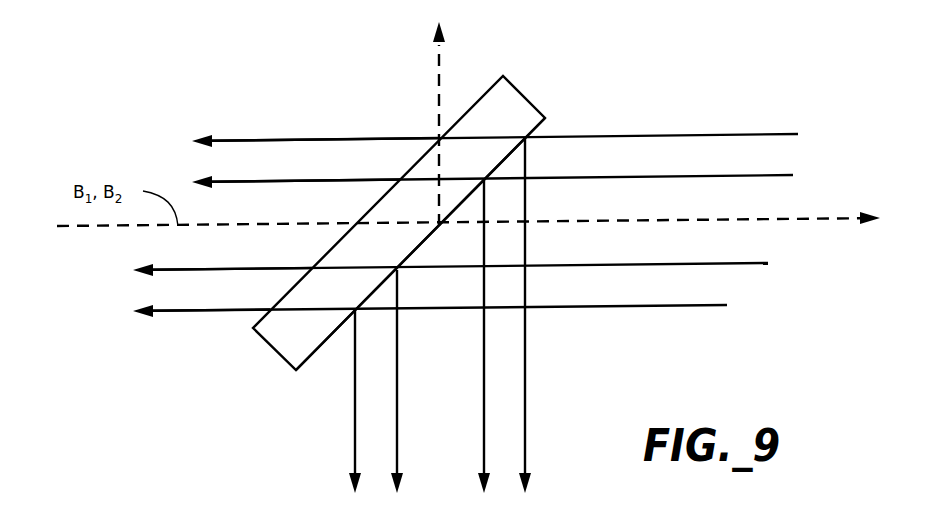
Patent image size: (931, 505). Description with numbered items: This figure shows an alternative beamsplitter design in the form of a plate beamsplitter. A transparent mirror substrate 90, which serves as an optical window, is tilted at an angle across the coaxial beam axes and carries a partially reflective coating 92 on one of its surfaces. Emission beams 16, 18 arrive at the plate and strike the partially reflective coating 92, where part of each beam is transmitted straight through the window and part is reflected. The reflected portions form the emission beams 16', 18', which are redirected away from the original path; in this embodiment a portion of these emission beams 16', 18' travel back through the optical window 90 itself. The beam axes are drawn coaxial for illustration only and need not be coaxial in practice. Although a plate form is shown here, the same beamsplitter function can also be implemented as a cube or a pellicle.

The emission beam 16 is at (495, 300).
The reflected emission beam portion 16' is at (325, 143).
The emission beam 18 is at (450, 378).
The reflected emission beam portion 18' is at (227, 311).
The transparent mirror substrate 90 is at (283, 360).
The partially reflective coating 92 is at (537, 130).